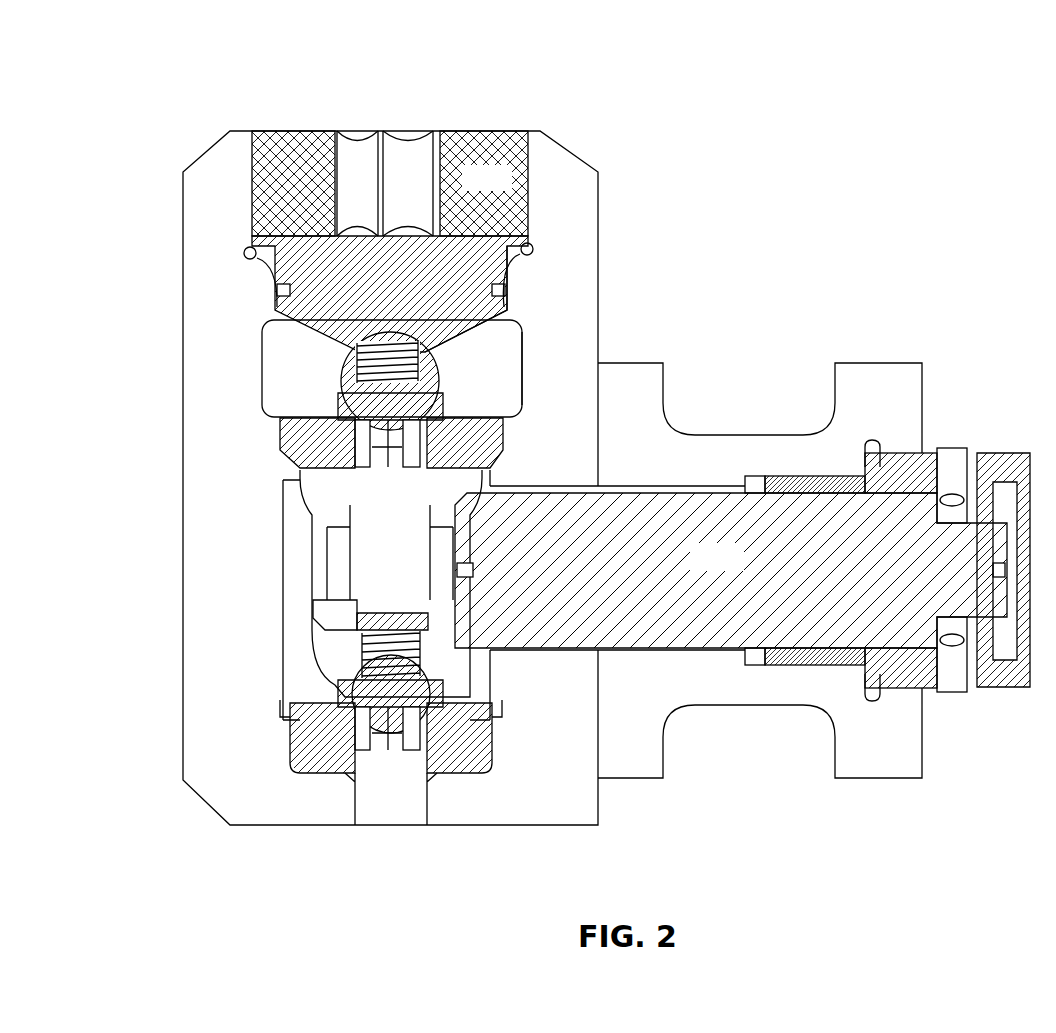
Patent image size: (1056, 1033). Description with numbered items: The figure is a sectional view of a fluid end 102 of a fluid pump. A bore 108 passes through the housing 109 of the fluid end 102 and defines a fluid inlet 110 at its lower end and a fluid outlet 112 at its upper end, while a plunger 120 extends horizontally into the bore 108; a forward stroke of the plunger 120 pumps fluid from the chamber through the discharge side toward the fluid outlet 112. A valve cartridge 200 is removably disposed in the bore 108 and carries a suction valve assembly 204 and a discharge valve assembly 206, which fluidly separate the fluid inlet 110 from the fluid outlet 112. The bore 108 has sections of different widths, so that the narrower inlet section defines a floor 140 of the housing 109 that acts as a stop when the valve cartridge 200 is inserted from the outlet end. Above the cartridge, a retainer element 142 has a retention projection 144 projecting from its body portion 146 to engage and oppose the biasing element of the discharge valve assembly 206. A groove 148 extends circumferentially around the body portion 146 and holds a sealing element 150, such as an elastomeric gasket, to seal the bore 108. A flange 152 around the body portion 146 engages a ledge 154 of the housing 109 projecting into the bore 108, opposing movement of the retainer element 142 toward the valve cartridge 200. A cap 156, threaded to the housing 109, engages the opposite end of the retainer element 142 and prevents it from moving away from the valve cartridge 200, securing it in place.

The fluid end 102 is at (138, 50).
The bore 108 is at (293, 542).
The housing 109 is at (193, 236).
The fluid inlet 110 is at (372, 813).
The fluid outlet 112 is at (430, 377).
The plunger 120 is at (741, 571).
The floor 140 is at (322, 770).
The retainer element 142 is at (430, 344).
The retention projection 144 is at (403, 350).
The body portion 146 is at (365, 294).
The groove 148 is at (495, 296).
The sealing element 150 is at (497, 289).
The flange 152 is at (534, 248).
The ledge 154 is at (263, 252).
The cap 156 is at (509, 189).
The valve cartridge 200 is at (272, 449).
The suction valve assembly 204 is at (398, 606).
The discharge valve assembly 206 is at (337, 388).